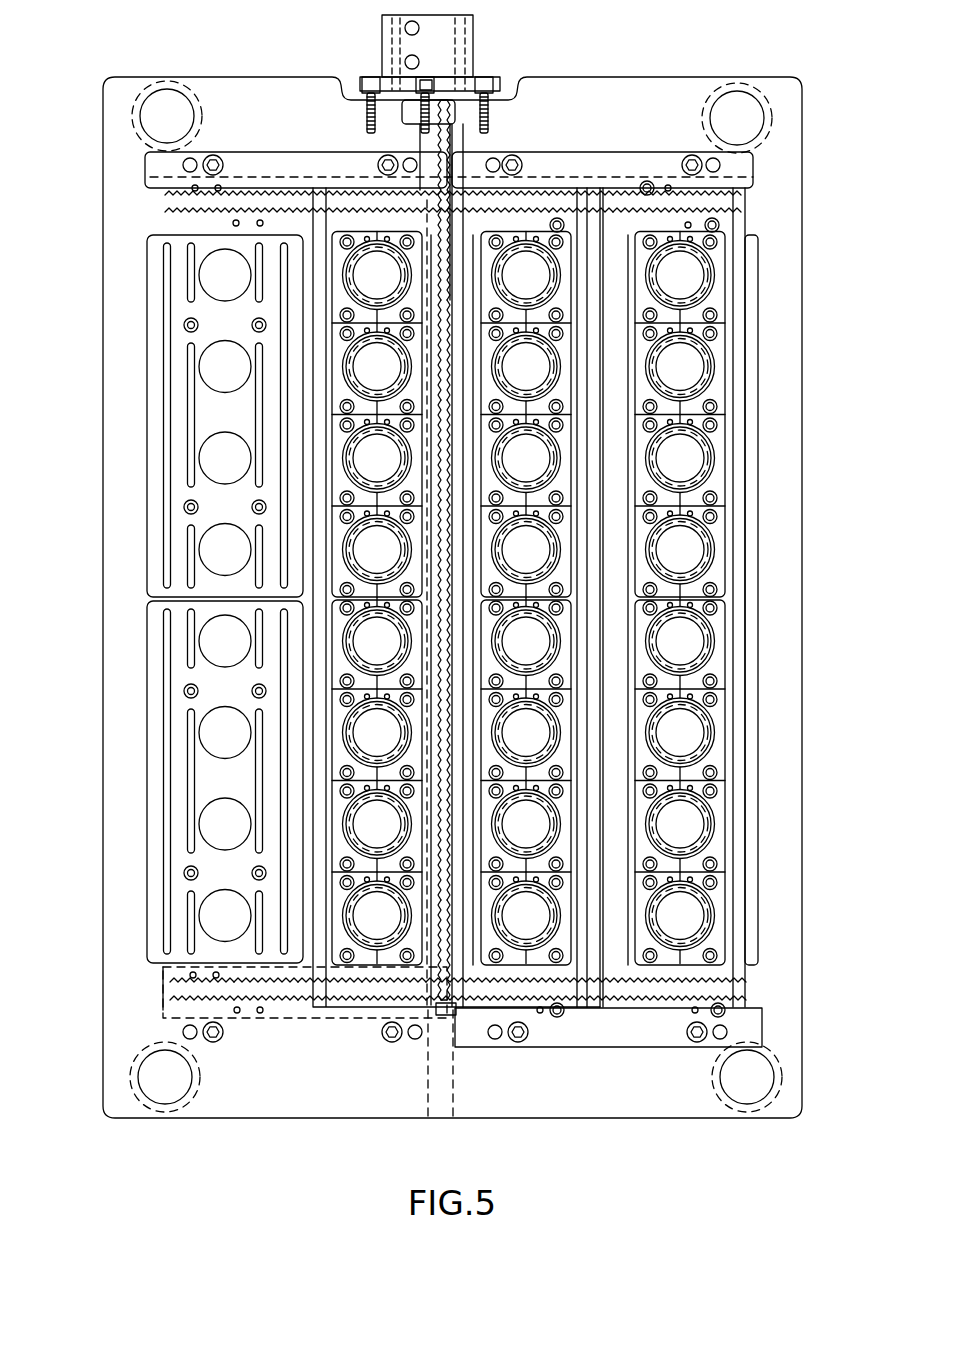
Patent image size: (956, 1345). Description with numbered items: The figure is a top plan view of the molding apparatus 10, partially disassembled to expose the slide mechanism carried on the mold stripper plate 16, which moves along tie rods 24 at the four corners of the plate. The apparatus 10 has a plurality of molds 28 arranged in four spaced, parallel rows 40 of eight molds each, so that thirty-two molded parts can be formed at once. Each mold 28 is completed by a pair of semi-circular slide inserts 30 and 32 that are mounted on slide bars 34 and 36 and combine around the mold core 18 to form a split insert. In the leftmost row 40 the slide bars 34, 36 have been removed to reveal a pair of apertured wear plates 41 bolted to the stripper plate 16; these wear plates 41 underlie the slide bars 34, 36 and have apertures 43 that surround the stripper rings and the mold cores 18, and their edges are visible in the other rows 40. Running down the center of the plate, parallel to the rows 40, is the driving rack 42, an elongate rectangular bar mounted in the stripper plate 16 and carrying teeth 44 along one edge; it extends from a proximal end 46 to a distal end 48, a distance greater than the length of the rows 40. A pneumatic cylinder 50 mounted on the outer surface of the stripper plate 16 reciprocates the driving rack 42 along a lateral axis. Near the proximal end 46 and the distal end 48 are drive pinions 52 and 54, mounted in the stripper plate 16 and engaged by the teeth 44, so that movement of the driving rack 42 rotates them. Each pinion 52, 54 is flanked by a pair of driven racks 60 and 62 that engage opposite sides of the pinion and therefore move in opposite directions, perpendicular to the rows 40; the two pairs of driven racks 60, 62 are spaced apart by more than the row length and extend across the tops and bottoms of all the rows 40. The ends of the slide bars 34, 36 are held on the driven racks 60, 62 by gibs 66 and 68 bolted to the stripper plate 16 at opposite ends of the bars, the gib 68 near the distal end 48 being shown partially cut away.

The molding apparatus 10 is at (447, 595).
The mold stripper plate 16 is at (130, 460).
The mold core 18 is at (666, 379).
The tie rods 24 is at (175, 100).
The mold 28 is at (683, 465).
The slide insert 30 is at (635, 415).
The slide insert 32 is at (713, 367).
The slide bar 34 is at (620, 333).
The slide bar 36 is at (737, 272).
The rows 40 is at (213, 788).
The wear plates 41 is at (310, 243).
The driving rack 42 is at (430, 393).
The apertures 43 is at (239, 927).
The teeth 44 is at (440, 341).
The proximal end 46 is at (427, 147).
The distal end 48 is at (430, 940).
The pneumatic cylinder 50 is at (382, 40).
The drive pinion 52 is at (452, 205).
The drive pinion 54 is at (447, 1015).
The driven rack 60 is at (163, 183).
The driven rack 62 is at (163, 223).
The gib 66 is at (243, 160).
The gib 68 is at (667, 1040).